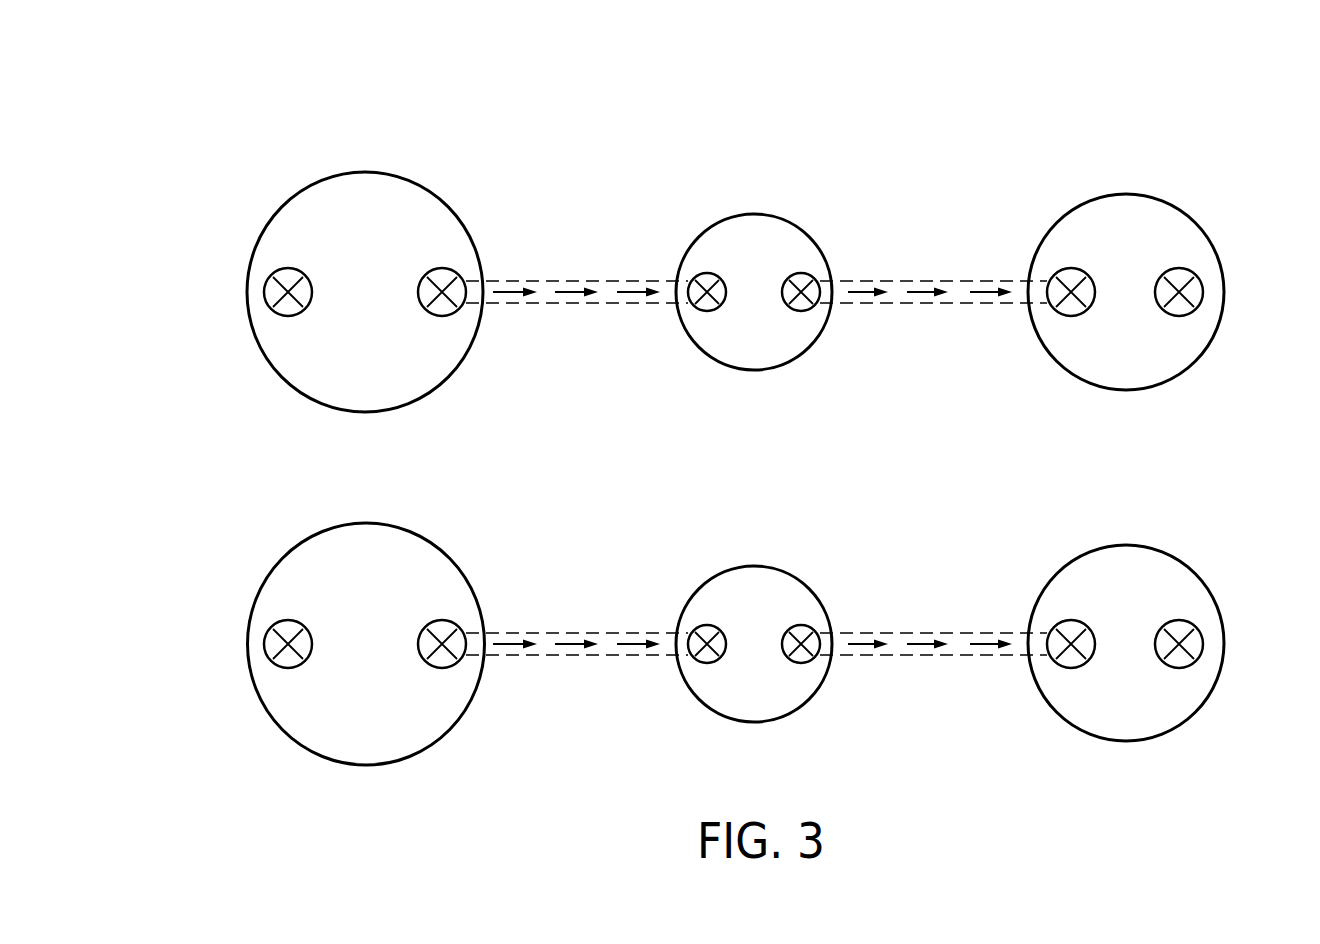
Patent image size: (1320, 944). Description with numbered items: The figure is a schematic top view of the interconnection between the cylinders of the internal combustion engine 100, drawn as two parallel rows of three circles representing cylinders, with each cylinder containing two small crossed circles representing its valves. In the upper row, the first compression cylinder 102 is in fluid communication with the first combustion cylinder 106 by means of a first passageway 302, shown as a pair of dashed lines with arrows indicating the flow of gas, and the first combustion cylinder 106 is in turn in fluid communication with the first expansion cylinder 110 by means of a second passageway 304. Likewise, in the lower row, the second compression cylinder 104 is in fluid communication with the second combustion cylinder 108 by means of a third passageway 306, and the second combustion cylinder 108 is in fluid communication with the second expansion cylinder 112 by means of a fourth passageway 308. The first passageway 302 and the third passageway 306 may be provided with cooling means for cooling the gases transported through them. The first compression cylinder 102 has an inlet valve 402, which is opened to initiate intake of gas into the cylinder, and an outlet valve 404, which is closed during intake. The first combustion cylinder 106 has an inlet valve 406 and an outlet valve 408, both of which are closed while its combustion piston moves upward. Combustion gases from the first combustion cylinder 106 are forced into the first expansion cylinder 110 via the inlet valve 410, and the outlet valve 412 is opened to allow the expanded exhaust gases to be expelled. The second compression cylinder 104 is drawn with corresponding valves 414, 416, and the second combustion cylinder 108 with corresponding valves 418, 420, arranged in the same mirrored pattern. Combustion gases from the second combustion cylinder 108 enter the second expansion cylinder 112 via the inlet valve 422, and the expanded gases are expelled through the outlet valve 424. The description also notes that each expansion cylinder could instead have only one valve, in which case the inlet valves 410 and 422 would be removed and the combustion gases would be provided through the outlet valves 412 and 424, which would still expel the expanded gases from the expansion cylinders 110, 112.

The resonator system 100 is at (263, 91).
The first compression cylinder 102 is at (370, 172).
The second compression cylinder 104 is at (372, 523).
The first combustion cylinder 106 is at (760, 213).
The second combustion cylinder 108 is at (762, 566).
The first expansion cylinder 110 is at (1132, 194).
The second expansion cylinder 112 is at (1134, 545).
The first passageway 302 is at (592, 282).
The second passageway 304 is at (915, 282).
The third passageway 306 is at (594, 634).
The fourth passageway 308 is at (913, 635).
The inlet valve 402 is at (273, 310).
The outlet valve 404 is at (457, 310).
The inlet valve 406 is at (694, 306).
The outlet valve 408 is at (814, 306).
The inlet valve 410 is at (1056, 310).
The outlet valve 412 is at (1194, 310).
The input port of resonator 104 414 is at (273, 662).
The output port of resonator 104 416 is at (457, 662).
The input port of resonator 108 418 is at (694, 658).
The output port of resonator 108 420 is at (814, 658).
The inlet valve 422 is at (1056, 662).
The outlet valve 424 is at (1194, 662).